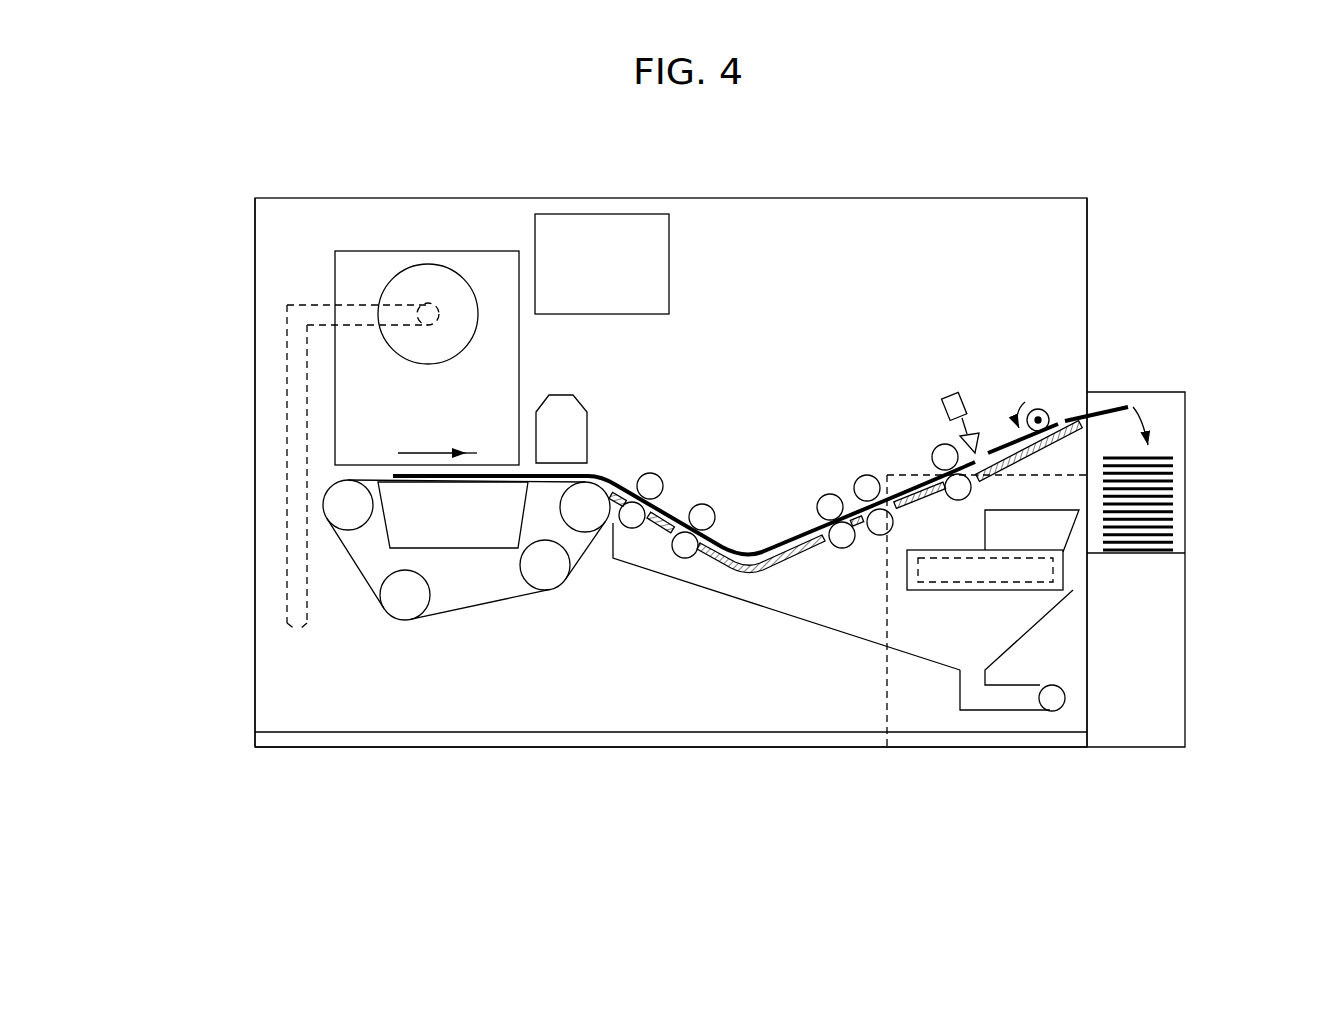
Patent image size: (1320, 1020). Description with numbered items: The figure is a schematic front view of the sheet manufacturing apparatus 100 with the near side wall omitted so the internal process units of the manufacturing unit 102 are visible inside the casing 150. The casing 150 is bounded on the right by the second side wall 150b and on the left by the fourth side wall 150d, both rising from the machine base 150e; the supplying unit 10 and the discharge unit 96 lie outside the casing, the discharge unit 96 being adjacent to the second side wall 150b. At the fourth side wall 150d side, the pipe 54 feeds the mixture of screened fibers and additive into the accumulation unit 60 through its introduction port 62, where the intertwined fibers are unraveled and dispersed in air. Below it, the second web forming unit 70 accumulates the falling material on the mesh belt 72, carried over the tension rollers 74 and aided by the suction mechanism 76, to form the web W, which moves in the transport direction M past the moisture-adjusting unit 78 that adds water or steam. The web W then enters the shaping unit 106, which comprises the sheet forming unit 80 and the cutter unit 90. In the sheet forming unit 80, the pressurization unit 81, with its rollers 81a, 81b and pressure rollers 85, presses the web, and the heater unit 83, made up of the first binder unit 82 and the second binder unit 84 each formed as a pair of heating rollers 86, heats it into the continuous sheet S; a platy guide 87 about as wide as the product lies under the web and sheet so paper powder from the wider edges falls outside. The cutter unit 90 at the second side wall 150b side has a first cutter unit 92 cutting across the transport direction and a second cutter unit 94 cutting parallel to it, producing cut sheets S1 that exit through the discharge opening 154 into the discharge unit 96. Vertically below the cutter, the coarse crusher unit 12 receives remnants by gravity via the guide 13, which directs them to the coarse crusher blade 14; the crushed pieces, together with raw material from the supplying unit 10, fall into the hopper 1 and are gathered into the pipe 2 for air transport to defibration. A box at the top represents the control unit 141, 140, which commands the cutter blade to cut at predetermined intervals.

The sheet manufacturing apparatus 100 is at (1001, 186).
The casing 150 is at (1092, 227).
The second side wall 150b is at (1089, 287).
The fourth side wall 150d is at (254, 278).
The machine base 150e is at (708, 747).
The discharge unit 96 is at (1136, 382).
The discharge opening 154 is at (1084, 408).
The accumulation unit 60 is at (468, 239).
The introduction port 62 is at (428, 303).
The pipe 54 is at (293, 360).
The control section 141 is at (664, 232).
The control unit 140 is at (660, 264).
The moisture-adjusting unit 78 is at (562, 409).
The transport direction M is at (430, 451).
The second web forming unit 70 is at (466, 551).
The mesh belt 72 is at (378, 484).
The tension rollers 74 is at (402, 595).
The suction mechanism 76 is at (465, 535).
The web W is at (601, 478).
The supplying unit 10 is at (882, 659).
The manufacturing unit 102 is at (744, 309).
The shaping unit 106 is at (835, 288).
The sheet forming unit 80 is at (927, 324).
The pressurization unit 81 is at (710, 474).
The first pressing roller 81a is at (656, 468).
The second pressing roller 81b is at (712, 494).
The pressure rollers 85 is at (650, 486).
The heater unit 83 is at (869, 459).
The first binder unit 82 is at (832, 491).
The second binder unit 84 is at (880, 470).
The heating rollers 86 is at (830, 507).
The platy guide 87 is at (771, 555).
The cutter unit 90 is at (1032, 324).
The first cutter unit 92 is at (954, 386).
The second cutter unit 94 is at (1039, 401).
The continuous sheet S is at (913, 499).
The cut sheet S1 is at (998, 444).
The coarse crusher unit 12 is at (1066, 572).
The guide 13 is at (1028, 522).
The coarse crusher blade 14 is at (947, 591).
The hopper 1 is at (1022, 640).
The pipe 2 is at (960, 683).